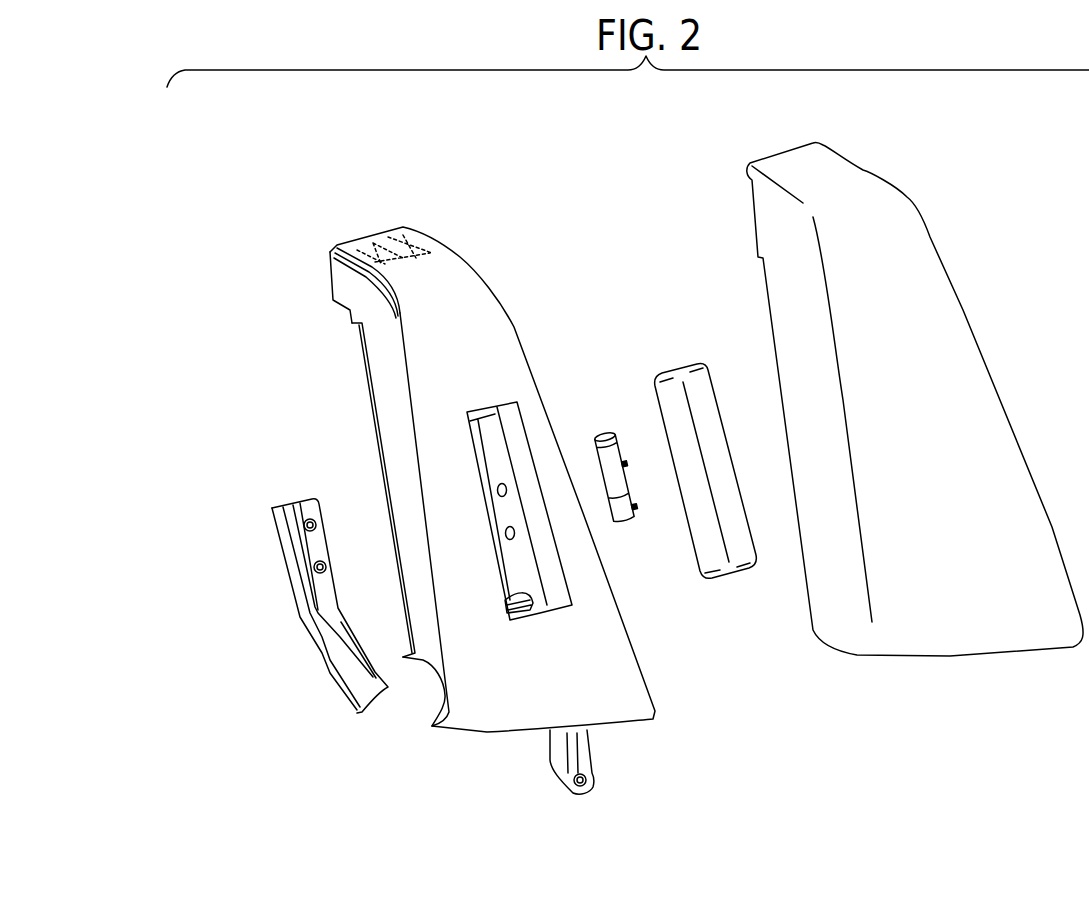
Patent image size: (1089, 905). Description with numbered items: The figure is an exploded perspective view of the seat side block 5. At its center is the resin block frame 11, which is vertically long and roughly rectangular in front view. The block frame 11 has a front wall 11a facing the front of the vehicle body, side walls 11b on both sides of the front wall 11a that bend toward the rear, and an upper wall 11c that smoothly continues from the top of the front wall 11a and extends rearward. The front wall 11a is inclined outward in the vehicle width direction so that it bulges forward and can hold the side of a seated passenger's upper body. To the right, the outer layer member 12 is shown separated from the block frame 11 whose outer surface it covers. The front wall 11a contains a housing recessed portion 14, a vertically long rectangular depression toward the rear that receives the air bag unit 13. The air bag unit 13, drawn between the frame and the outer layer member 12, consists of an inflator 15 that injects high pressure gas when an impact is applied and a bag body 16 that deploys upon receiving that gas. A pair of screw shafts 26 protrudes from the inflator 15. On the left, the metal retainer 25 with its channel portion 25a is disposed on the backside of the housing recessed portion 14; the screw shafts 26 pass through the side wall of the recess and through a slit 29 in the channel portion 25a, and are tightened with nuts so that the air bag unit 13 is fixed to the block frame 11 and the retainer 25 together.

The seat side block 5 is at (637, 150).
The block frame 11 is at (496, 481).
The front wall 11a is at (630, 675).
The side walls 11b is at (384, 383).
The upper wall 11c is at (378, 250).
The outer layer member 12 is at (898, 168).
The air bag unit 13 is at (663, 293).
The housing recessed portion 14 is at (530, 613).
The inflator 15 is at (598, 430).
The bag body 16 is at (677, 366).
The retainer 25 is at (296, 571).
The channel portion 25a is at (290, 580).
The screw shafts 26 is at (630, 466).
The slit 29 is at (314, 523).